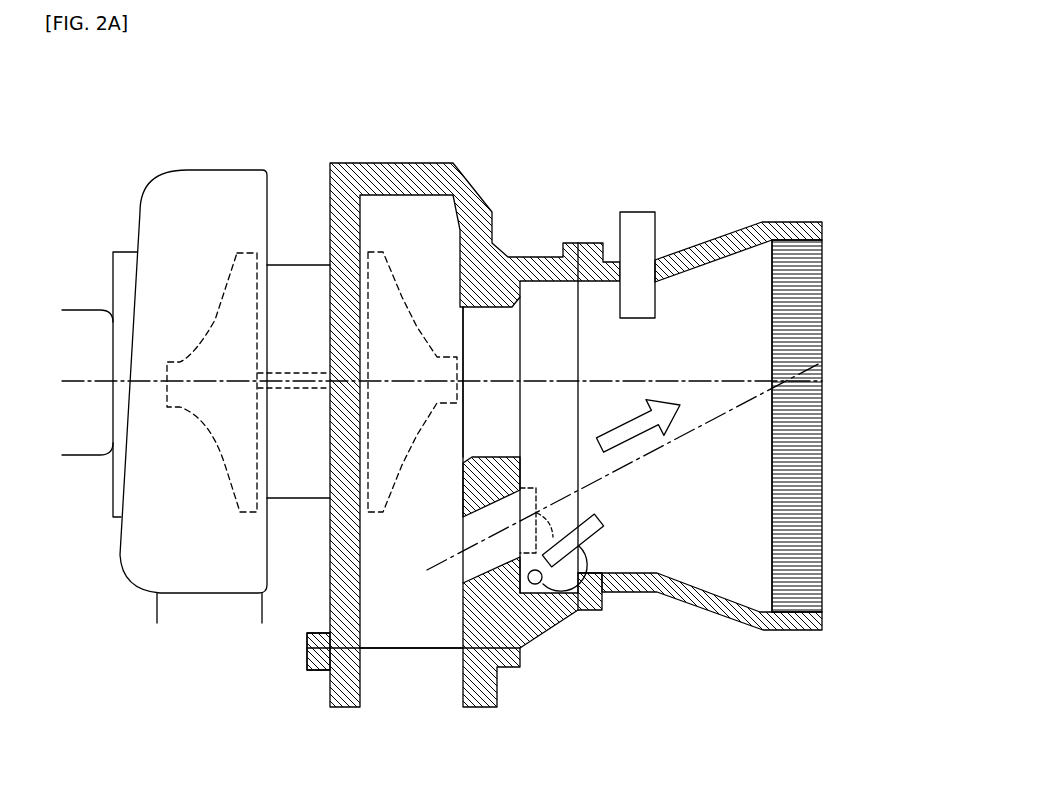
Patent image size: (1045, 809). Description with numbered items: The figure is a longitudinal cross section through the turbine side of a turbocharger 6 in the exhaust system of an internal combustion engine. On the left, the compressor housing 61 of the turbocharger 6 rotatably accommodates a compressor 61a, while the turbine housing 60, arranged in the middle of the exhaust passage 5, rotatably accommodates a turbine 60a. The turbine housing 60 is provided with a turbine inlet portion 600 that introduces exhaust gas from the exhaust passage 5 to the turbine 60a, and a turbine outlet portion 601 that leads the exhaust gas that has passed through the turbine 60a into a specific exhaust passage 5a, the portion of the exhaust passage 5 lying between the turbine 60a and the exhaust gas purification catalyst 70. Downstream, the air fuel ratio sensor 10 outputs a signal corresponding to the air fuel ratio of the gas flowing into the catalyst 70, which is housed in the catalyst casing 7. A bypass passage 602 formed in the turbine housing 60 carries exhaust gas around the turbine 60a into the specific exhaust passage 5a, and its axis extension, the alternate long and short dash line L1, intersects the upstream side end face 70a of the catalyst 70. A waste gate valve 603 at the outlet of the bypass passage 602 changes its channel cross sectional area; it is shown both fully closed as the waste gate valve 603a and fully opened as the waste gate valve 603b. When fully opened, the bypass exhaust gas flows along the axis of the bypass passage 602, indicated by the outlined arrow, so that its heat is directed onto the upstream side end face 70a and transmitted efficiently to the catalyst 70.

The turbocharger 6 is at (232, 116).
The compressor housing 61 is at (170, 175).
The compressor 61a is at (222, 462).
The turbine housing 60 is at (427, 163).
The turbine 60a is at (408, 450).
The turbine inlet portion 600 is at (403, 608).
The turbine outlet portion 601 is at (493, 330).
The bypass passage 602 is at (480, 562).
The waste gate valve 603 is at (600, 514).
The waste gate valve in fully closed state 603a is at (538, 488).
The waste gate valve in fully opened state 603b is at (605, 530).
The exhaust passage 5 is at (422, 687).
The specific exhaust passage 5a is at (537, 314).
The air fuel ratio sensor 10 is at (657, 226).
The catalyst casing 7 is at (760, 630).
The exhaust gas purification catalyst 70 is at (807, 592).
The upstream side end face 70a is at (771, 470).
The alternate long and short dash line L1 is at (724, 413).